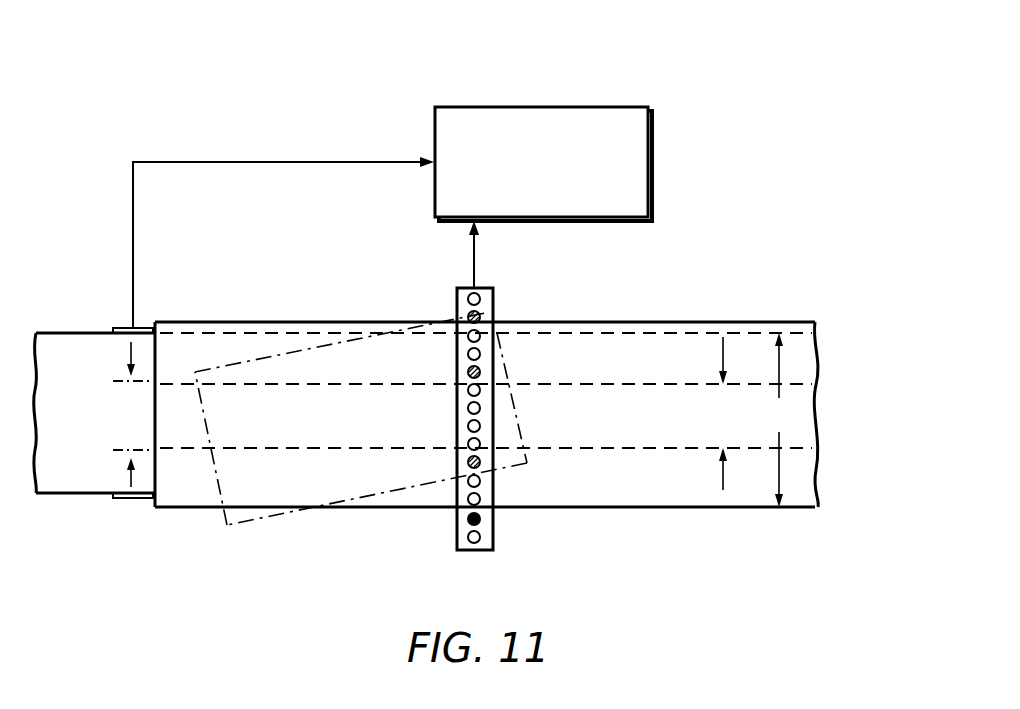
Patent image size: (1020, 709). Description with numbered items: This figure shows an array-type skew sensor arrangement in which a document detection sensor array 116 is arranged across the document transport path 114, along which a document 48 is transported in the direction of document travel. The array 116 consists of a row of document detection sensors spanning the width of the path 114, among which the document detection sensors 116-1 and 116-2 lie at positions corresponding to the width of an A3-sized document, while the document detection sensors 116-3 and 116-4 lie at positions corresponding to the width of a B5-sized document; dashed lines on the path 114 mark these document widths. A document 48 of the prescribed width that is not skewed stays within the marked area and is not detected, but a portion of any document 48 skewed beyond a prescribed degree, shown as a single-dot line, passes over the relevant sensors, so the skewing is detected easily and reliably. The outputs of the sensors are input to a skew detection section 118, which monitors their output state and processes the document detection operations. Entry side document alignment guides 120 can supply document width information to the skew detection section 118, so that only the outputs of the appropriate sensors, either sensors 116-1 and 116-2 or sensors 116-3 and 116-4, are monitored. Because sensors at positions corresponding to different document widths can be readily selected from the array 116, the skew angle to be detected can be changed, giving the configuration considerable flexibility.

The skew detection section 118 is at (653, 120).
The transport path 114 is at (670, 320).
The document 48 is at (88, 495).
The entry side document alignment guides 120 is at (117, 328).
The document detection sensor array 116 is at (483, 410).
The document detection sensor 116-1 is at (458, 315).
The document detection sensor 116-2 is at (480, 520).
The document detection sensor 116-3 is at (480, 372).
The document detection sensor 116-4 is at (480, 462).